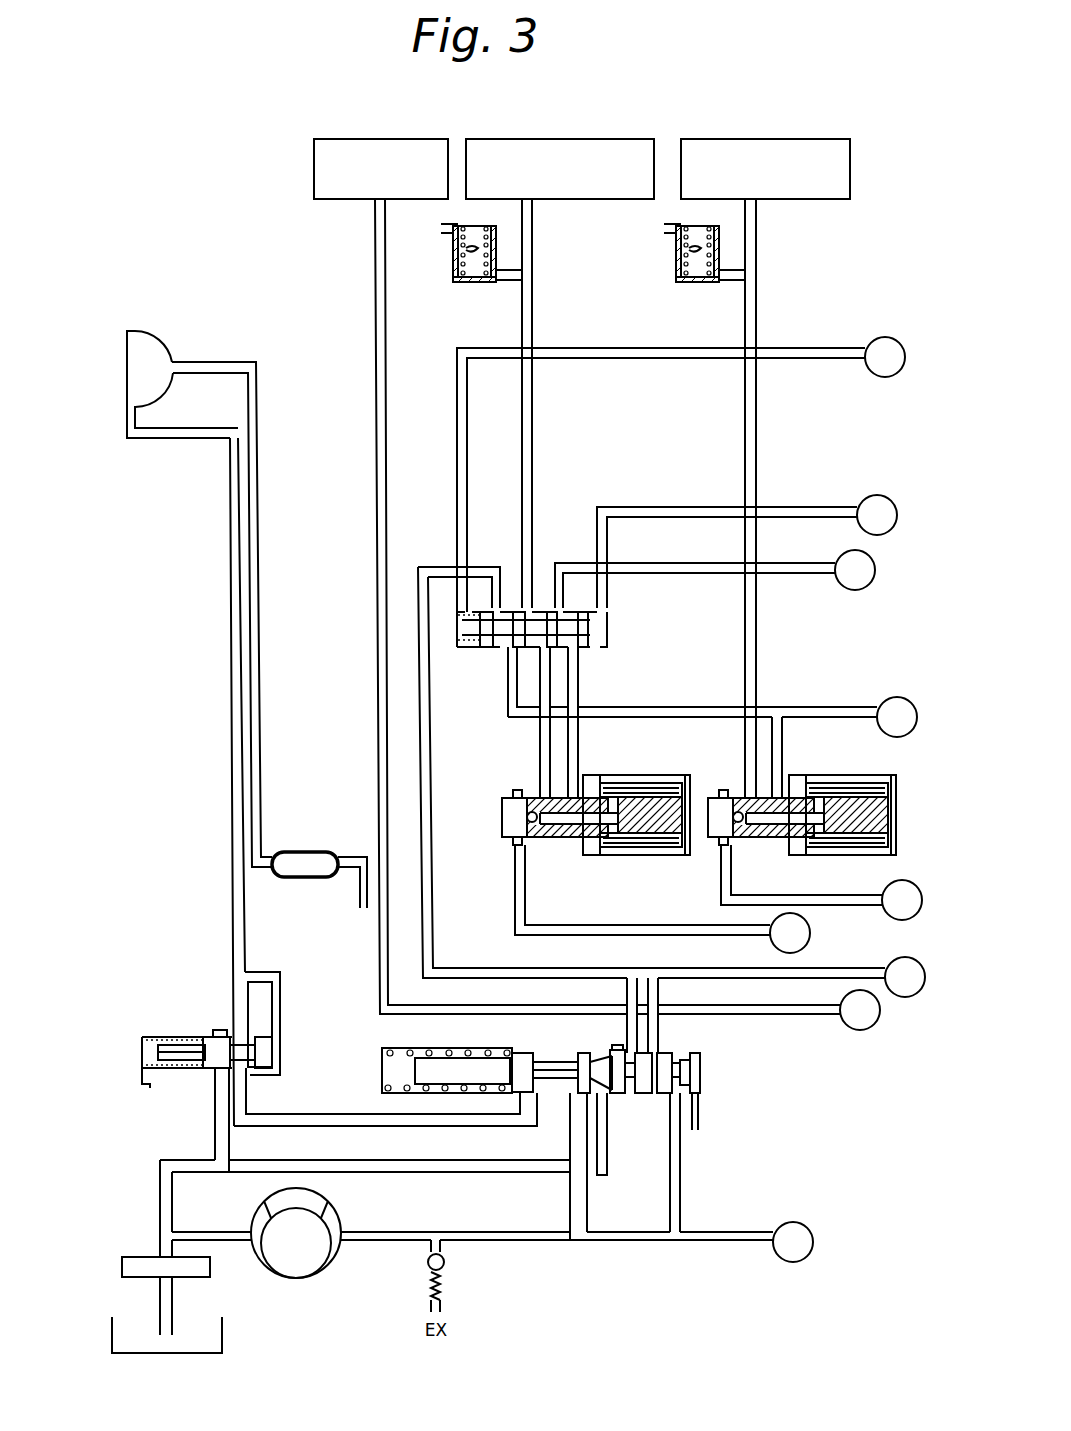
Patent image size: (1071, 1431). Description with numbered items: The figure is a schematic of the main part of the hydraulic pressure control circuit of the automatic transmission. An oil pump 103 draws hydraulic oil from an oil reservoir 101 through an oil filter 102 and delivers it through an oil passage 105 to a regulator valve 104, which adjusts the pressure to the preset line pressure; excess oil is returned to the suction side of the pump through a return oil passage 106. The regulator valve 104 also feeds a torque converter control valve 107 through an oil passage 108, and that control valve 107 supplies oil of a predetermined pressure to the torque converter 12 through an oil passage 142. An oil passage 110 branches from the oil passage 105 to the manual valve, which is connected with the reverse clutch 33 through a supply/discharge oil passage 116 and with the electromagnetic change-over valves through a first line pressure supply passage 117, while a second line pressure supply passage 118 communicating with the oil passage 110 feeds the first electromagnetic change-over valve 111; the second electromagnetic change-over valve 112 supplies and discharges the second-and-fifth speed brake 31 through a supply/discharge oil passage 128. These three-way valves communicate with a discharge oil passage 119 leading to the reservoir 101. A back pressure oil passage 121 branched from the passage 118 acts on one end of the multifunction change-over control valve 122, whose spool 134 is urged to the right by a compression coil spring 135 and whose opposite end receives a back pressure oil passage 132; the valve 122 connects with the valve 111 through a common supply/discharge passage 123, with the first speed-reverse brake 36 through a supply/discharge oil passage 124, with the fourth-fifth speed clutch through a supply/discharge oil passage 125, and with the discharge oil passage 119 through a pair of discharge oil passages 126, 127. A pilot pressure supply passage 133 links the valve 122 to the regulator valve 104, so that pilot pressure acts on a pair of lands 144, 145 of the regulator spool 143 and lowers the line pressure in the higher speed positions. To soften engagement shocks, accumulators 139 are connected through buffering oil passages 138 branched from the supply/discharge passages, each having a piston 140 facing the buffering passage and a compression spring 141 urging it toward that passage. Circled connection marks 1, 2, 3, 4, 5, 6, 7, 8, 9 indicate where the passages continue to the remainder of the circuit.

The torque converter 12 is at (147, 330).
The 2·5 speed brake 31 is at (774, 139).
The reverse clutch 33 is at (388, 139).
The 1st speed-reverse brake 36 is at (572, 139).
The oil reservoir 101 is at (212, 1335).
The oil filter 102 is at (200, 1268).
The oil pump 103 is at (340, 1258).
The regulator valve 104 is at (510, 1058).
The oil passage 105 is at (587, 1205).
The return oil passage 106 is at (418, 1172).
The torque converter control valve 107 is at (190, 1024).
The oil passage 108 is at (318, 1114).
The oil passage 110 is at (733, 1232).
The first electromagnetic change-over valve 111 is at (637, 775).
The second electromagnetic change-over valve 112 is at (820, 775).
The supply/discharge oil passage 116 is at (375, 400).
The first line pressure supply passage 117 is at (845, 905).
The second line pressure supply passage 118 is at (613, 925).
The discharge oil passage 119 is at (693, 707).
The back pressure oil passage 121 is at (665, 507).
The multifunction change-over control valve 122 is at (513, 586).
The common supply/discharge passage 123 is at (540, 742).
The supply/discharge oil passage 124 is at (532, 417).
The supply/discharge oil passage 125 is at (673, 563).
The discharge oil passage 126 is at (508, 677).
The discharge oil passage 127 is at (578, 680).
The supply/discharge oil passage 128 is at (756, 417).
The back pressure oil passage 132 is at (822, 348).
The pilot pressure supply passage 133 is at (425, 737).
The spool 134 is at (590, 627).
The compression coil spring 135 is at (462, 613).
The buffering oil passage 138 is at (506, 282).
The accumulator 139 is at (462, 300).
The piston 140 is at (458, 283).
The compression spring 141 is at (460, 250).
The oil passage 142 is at (231, 590).
The spool 143 is at (480, 1067).
The land 144 is at (620, 1055).
The land 145 is at (640, 1095).
The port 1 is at (885, 357).
The port 2 is at (877, 515).
The port 3 is at (855, 570).
The port 4 is at (897, 717).
The port 5 is at (902, 900).
The port 6 is at (790, 933).
The port 7 is at (905, 977).
The port 8 is at (860, 1010).
The port 9 is at (793, 1242).